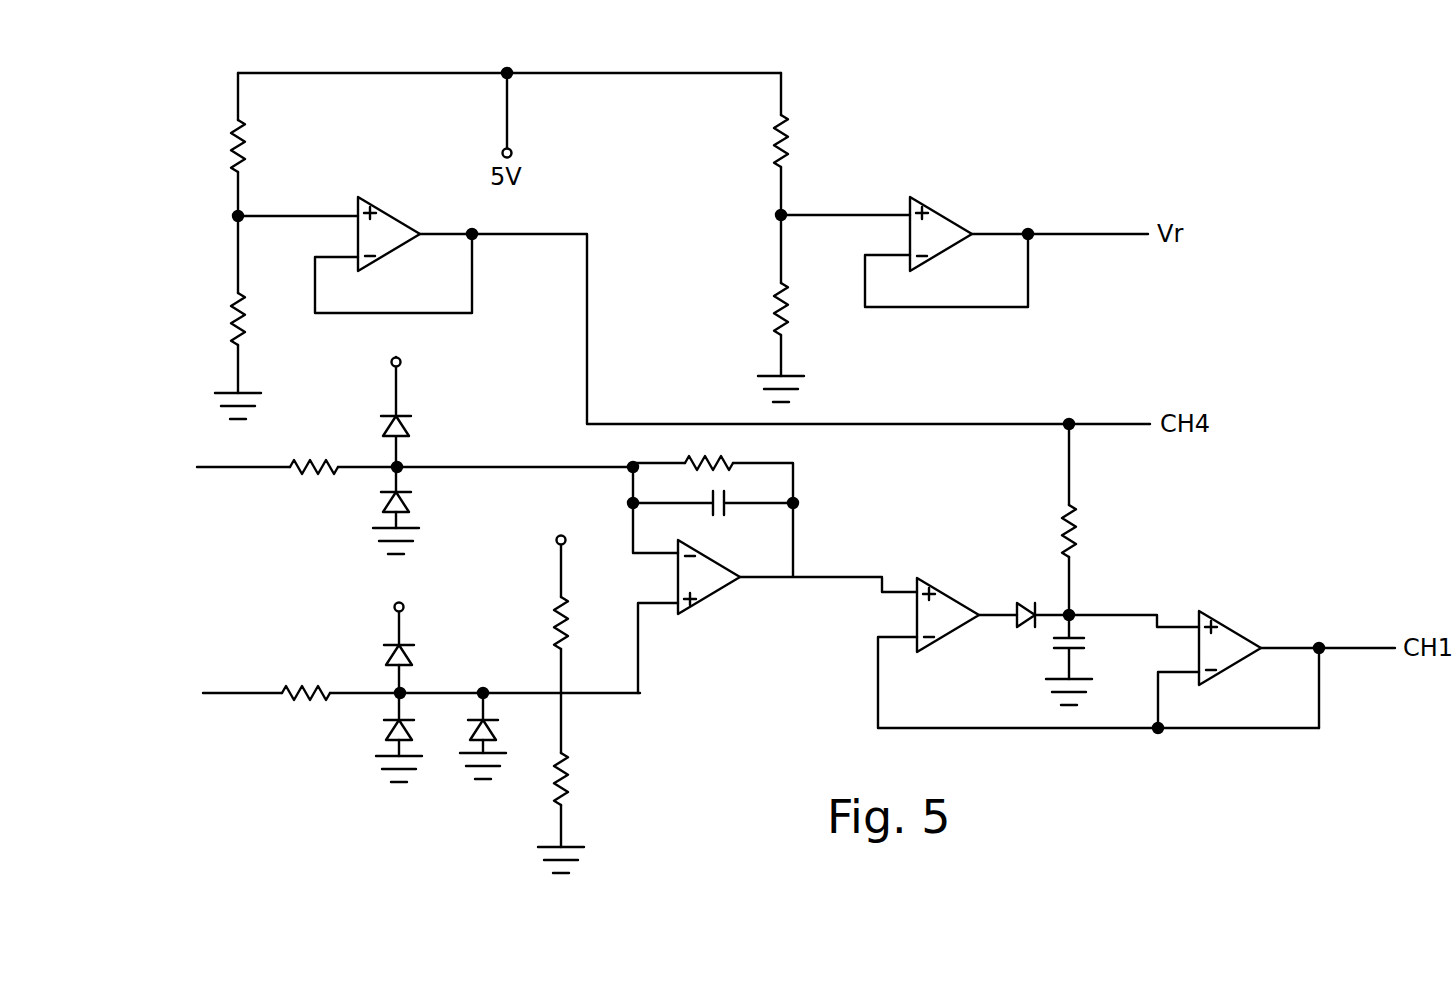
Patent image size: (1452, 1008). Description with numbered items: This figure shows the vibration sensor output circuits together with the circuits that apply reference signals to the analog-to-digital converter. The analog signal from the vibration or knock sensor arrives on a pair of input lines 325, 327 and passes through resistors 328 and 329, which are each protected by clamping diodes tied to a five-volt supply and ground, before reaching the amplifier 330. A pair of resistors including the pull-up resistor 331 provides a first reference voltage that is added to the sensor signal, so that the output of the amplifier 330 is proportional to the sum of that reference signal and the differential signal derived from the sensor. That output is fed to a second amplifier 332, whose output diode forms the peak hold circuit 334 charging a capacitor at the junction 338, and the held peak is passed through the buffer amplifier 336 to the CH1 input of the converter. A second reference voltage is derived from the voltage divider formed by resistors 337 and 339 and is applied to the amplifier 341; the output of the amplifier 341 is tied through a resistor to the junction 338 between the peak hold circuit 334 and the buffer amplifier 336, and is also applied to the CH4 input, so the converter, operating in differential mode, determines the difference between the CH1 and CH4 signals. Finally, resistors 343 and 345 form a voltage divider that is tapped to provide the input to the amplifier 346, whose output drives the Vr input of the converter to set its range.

The first input line 325 is at (220, 467).
The second input line 327 is at (222, 693).
The resistor 328 is at (313, 462).
The resistor 329 is at (312, 689).
The amplifier 330 is at (712, 595).
The resistor 331 is at (557, 637).
The amplifier 332 is at (575, 788).
The peak hold circuit 334 is at (1032, 644).
The buffer amplifier 336 is at (1237, 629).
The resistor 337 is at (250, 152).
The junction 338 is at (1076, 612).
The resistor 339 is at (232, 324).
The amplifier 341 is at (388, 214).
The resistor 343 is at (795, 153).
The resistor 345 is at (775, 322).
The amplifier 346 is at (948, 212).